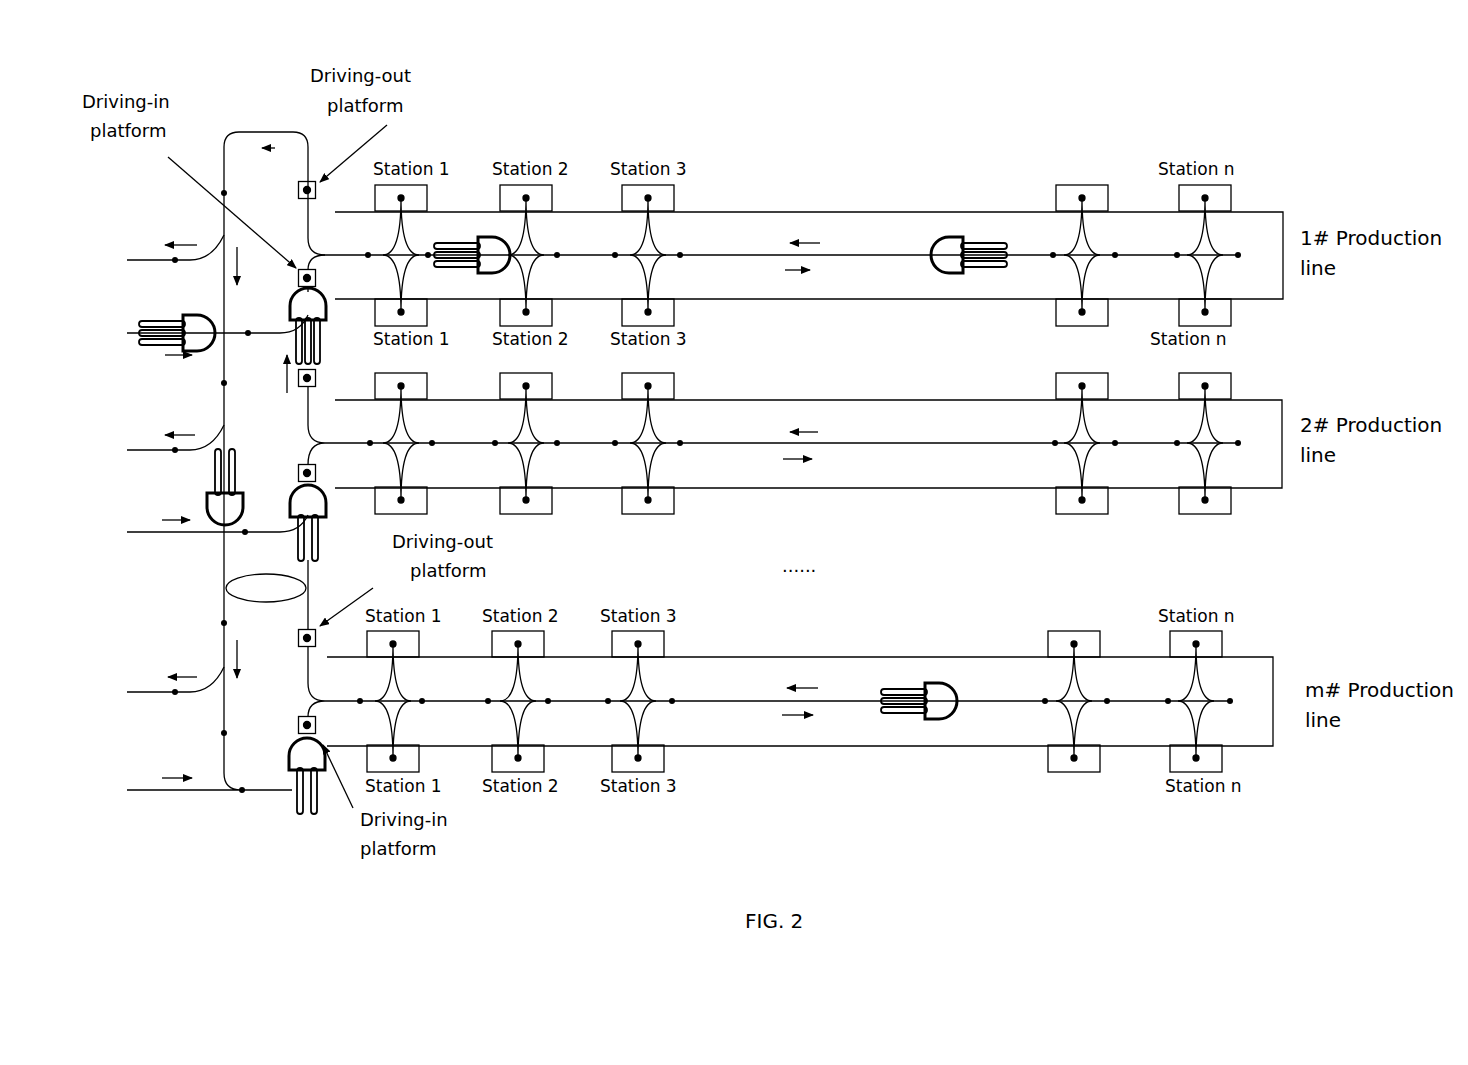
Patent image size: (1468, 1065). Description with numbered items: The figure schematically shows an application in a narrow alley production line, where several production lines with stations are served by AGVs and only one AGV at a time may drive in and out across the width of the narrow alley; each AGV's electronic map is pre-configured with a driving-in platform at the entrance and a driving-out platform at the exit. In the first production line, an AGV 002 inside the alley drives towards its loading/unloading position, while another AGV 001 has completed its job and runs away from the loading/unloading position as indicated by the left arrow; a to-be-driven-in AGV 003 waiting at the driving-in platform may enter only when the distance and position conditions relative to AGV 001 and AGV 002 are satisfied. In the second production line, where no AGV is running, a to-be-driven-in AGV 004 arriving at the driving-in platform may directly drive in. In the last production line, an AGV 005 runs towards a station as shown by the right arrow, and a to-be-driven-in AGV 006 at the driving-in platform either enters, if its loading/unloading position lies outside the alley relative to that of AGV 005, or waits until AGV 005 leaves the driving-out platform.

The AGV 001 is at (930, 240).
The AGV 002 is at (490, 233).
The to-be-driven-in AGV 003 is at (287, 307).
The to-be-driven-in AGV 004 is at (273, 508).
The AGV 005 is at (910, 683).
The to-be-driven-in AGV 006 is at (285, 768).